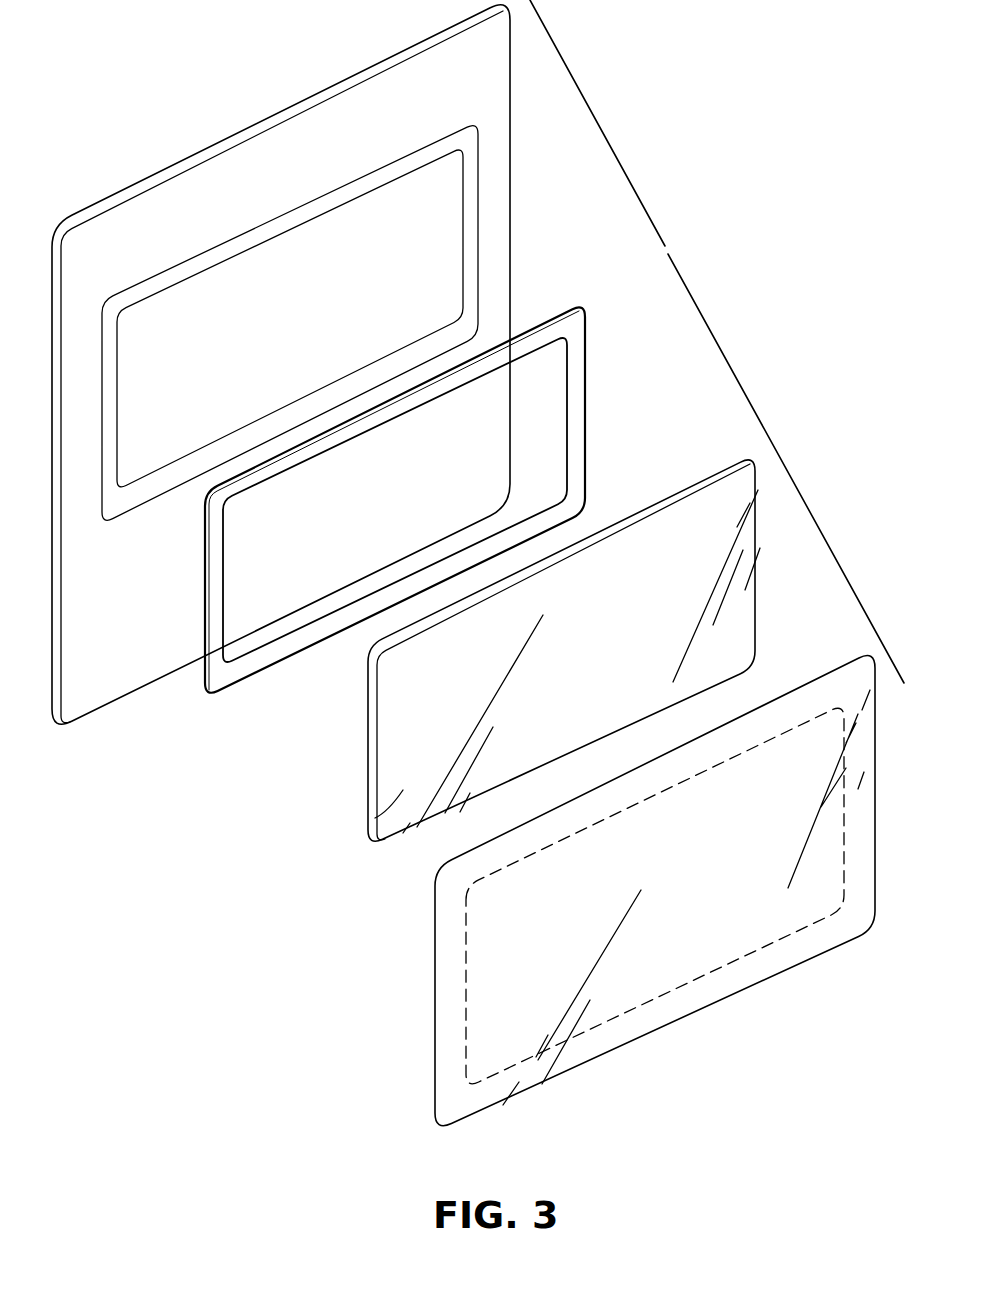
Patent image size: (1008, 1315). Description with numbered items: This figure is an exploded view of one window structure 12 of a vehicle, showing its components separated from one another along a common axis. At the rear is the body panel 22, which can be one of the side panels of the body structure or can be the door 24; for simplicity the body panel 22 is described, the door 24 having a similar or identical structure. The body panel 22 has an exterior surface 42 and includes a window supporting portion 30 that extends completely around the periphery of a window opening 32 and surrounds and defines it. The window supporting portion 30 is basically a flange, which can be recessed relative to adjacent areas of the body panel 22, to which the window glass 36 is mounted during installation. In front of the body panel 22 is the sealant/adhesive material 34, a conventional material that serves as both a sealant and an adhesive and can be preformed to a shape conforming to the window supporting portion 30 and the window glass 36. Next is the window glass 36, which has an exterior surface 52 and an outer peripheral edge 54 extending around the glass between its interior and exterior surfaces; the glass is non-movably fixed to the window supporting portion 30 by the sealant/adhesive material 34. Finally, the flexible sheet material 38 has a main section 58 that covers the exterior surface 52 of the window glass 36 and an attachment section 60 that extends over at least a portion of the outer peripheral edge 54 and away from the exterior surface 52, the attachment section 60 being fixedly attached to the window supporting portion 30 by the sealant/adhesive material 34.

The window structure 12 is at (665, 246).
The body panel 22 is at (332, 373).
The door 24 is at (332, 373).
The window supporting portion 30 is at (273, 230).
The window opening 32 is at (290, 323).
The exterior surface 42 is at (119, 654).
The sealant/adhesive material 34 is at (575, 400).
The window glass 36 is at (555, 650).
The outer peripheral edge 54 is at (370, 773).
The exterior surface 52 is at (375, 818).
The flexible sheet material 38 is at (655, 886).
The main section 58 is at (742, 921).
The attachment section 60 is at (678, 1002).